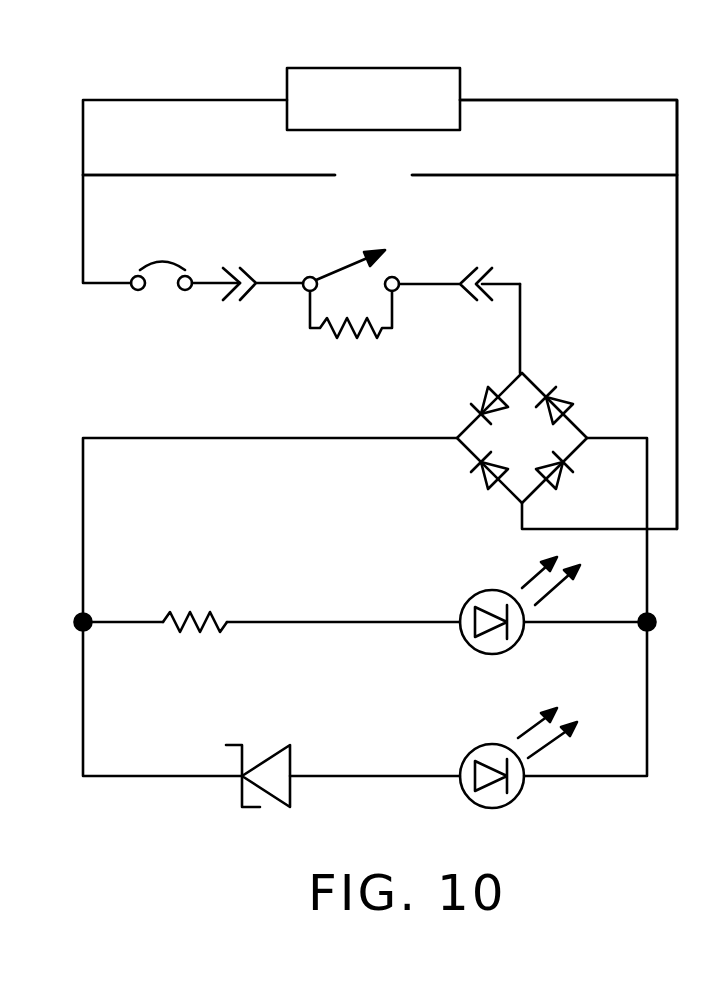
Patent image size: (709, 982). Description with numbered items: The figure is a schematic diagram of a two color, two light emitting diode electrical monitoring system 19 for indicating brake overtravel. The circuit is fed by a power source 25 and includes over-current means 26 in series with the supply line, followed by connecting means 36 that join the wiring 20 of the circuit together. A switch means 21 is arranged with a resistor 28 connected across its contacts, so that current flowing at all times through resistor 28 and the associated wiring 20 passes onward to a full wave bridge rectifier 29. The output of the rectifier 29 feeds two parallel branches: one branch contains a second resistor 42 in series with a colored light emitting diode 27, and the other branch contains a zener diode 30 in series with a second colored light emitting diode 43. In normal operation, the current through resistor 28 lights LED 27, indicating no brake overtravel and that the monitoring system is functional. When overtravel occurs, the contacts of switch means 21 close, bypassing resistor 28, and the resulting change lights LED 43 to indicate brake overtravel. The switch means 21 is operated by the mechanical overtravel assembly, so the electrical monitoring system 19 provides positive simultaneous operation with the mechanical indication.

The electrical monitoring system 19 is at (527, 100).
The wiring 20 is at (380, 178).
The switch means 21 is at (340, 270).
The power source 25 is at (315, 73).
The over-current means 26 is at (160, 262).
The light emitting diode 27 is at (488, 590).
The resistor 28 is at (355, 343).
The full wave bridge rectifier 29 is at (563, 398).
The zener diode 30 is at (270, 752).
The connecting means 36 is at (233, 303).
The resistor 42 is at (203, 612).
The light emitting diode 43 is at (492, 742).